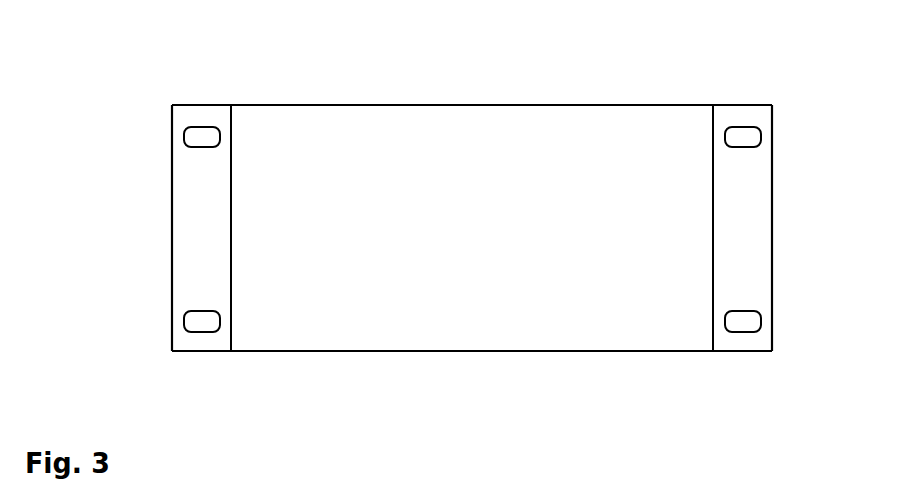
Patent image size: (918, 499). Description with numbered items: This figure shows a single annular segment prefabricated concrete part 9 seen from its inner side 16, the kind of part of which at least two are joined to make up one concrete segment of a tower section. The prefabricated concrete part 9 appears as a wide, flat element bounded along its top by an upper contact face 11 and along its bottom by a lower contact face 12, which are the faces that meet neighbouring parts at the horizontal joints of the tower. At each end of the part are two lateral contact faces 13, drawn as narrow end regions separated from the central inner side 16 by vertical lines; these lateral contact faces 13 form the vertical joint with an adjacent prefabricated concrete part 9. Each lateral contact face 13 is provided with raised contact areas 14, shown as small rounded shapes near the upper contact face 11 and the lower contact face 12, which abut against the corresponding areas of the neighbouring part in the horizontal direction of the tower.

The prefabricated concrete part 9 is at (458, 220).
The upper contact face 11 is at (402, 105).
The lower contact face 12 is at (453, 351).
The lateral contact face 13 is at (458, 219).
The raised contact area 14 is at (195, 135).
The inner side 16 is at (388, 168).